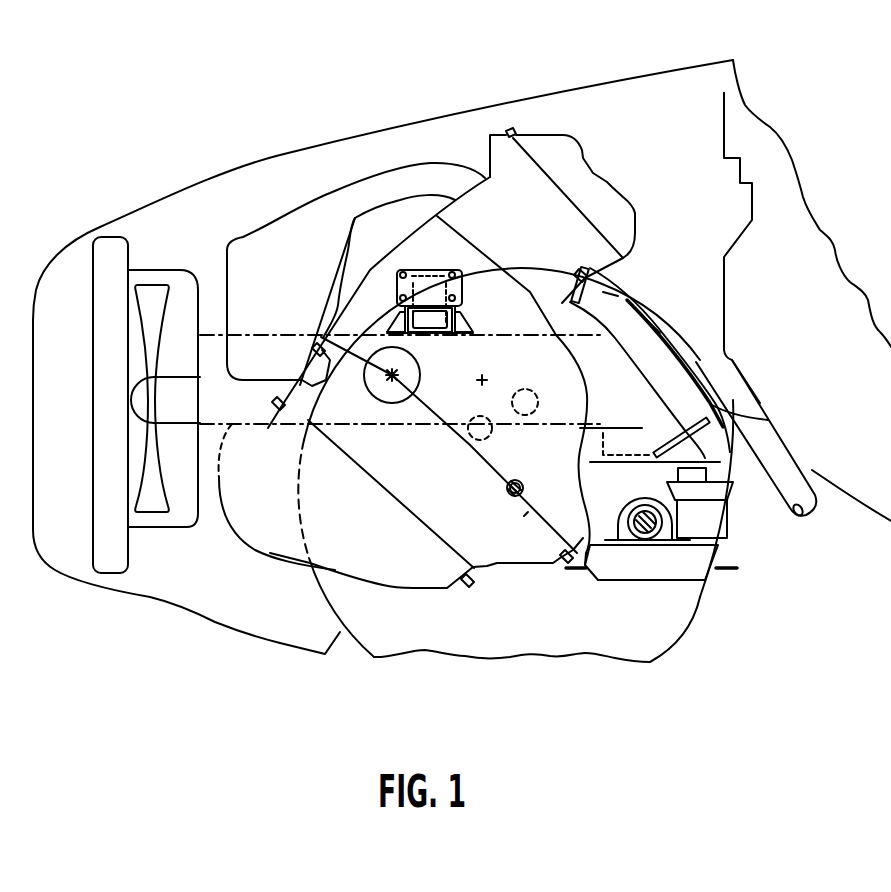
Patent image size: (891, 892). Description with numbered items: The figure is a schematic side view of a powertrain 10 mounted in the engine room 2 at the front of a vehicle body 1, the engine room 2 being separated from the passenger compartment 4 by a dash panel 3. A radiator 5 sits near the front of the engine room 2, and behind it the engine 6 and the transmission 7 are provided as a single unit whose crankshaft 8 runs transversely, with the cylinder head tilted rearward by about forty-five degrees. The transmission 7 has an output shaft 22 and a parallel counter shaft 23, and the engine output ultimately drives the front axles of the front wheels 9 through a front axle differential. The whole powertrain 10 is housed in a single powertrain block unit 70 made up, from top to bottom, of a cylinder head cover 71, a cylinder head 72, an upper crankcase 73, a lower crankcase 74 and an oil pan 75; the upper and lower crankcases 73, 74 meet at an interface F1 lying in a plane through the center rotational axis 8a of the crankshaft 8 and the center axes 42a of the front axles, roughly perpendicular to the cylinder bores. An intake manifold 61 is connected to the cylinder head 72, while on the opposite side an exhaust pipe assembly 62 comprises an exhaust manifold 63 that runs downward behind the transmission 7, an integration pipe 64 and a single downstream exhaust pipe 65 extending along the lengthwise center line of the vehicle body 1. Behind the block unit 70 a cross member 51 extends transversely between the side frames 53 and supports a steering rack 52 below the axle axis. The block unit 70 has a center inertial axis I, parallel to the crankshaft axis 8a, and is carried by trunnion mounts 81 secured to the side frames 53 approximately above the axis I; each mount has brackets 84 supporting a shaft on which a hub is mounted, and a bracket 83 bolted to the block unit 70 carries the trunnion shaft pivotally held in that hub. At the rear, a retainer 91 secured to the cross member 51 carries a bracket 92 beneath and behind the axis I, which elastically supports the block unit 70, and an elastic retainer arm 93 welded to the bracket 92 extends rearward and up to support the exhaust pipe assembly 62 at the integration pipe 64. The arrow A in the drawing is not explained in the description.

The vehicle body 1 is at (379, 126).
The engine room 2 is at (682, 187).
The dash panel 3 is at (724, 284).
The passenger compartment 4 is at (810, 365).
The radiator 5 is at (91, 407).
The engine 6 is at (345, 286).
The transmission 7 is at (620, 374).
The crankshaft 8 is at (390, 404).
The center axis of rotation of the crankshaft 8a is at (380, 390).
The front wheels 9 is at (783, 420).
The powertrain 10 is at (643, 279).
The output shaft 22 is at (518, 428).
The counter shaft 23 is at (483, 460).
The center axes of rotation of the front axles 42a is at (506, 490).
The cross member 51 is at (649, 581).
The steering rack 52 is at (633, 514).
The side frames 53 is at (222, 477).
The intake manifold 61 is at (332, 194).
The exhaust pipe assembly 62 is at (729, 379).
The exhaust manifold 63 is at (652, 332).
The integration pipe 64 is at (763, 411).
The downstream exhaust pipe 65 is at (824, 474).
The single powertrain block unit 70 is at (349, 287).
The cylinder head cover 71 is at (578, 136).
The cylinder head 72 is at (489, 149).
The upper crankcase 73 is at (367, 271).
The lower crankcase 74 is at (404, 490).
The oil pan 75 is at (377, 583).
The trunnion mount 81 is at (432, 325).
The bracket 83 is at (431, 270).
The brackets 84 is at (463, 331).
The rear retainer 91 is at (725, 518).
The bracket 92 is at (626, 447).
The elastic retainer arm 93 is at (762, 444).
The direction A is at (718, 322).
The interface F1 is at (528, 512).
The center axis of inertia I is at (475, 382).